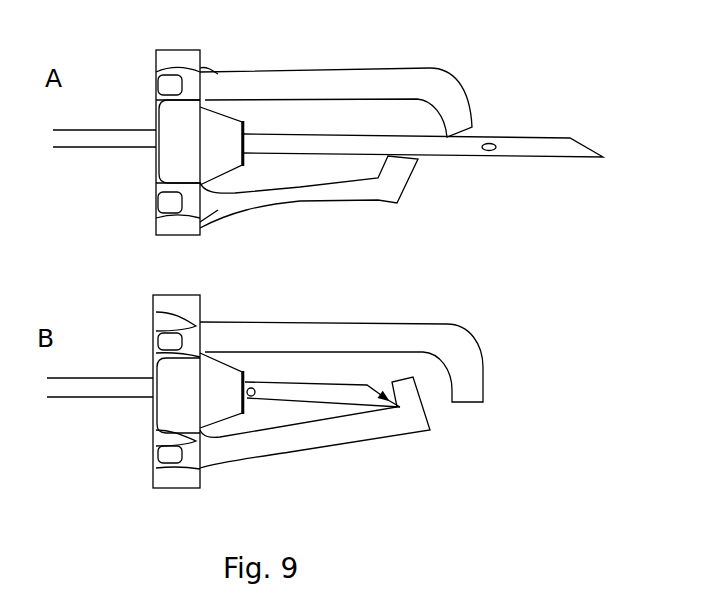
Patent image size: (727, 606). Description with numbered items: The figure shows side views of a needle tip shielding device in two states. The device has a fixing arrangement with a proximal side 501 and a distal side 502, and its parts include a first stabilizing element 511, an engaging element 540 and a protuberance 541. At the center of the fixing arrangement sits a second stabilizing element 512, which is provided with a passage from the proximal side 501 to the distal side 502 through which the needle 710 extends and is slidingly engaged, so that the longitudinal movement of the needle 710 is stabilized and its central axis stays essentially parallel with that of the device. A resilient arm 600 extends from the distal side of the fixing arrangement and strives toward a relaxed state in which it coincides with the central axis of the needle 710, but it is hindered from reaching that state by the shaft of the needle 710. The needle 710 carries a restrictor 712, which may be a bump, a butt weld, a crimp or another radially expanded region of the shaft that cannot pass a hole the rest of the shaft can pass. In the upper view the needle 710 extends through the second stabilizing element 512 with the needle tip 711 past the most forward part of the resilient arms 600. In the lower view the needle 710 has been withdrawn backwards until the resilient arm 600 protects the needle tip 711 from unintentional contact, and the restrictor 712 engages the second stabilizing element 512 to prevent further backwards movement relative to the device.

In FIG. 9B, the proximal side 501 is at (142, 320).
In FIG. 9B, the distal side 502 is at (210, 309).
In FIG. 9A, the first stabilizing element 511 is at (164, 156).
In FIG. 9A, the second stabilizing element 512 is at (230, 161).
In FIG. 9A, the engaging element 540 is at (205, 76).
In FIG. 9A, the protuberance 541 is at (162, 83).
In FIG. 9A, the resilient arm 600 is at (322, 74).
In FIG. 9B, the needle 710 is at (97, 405).
In FIG. 9A, the needle tip 711 is at (610, 140).
In FIG. 9B, the needle tip 711 is at (410, 411).
In FIG. 9A, the restrictor 712 is at (492, 160).
In FIG. 9B, the restrictor 712 is at (259, 404).